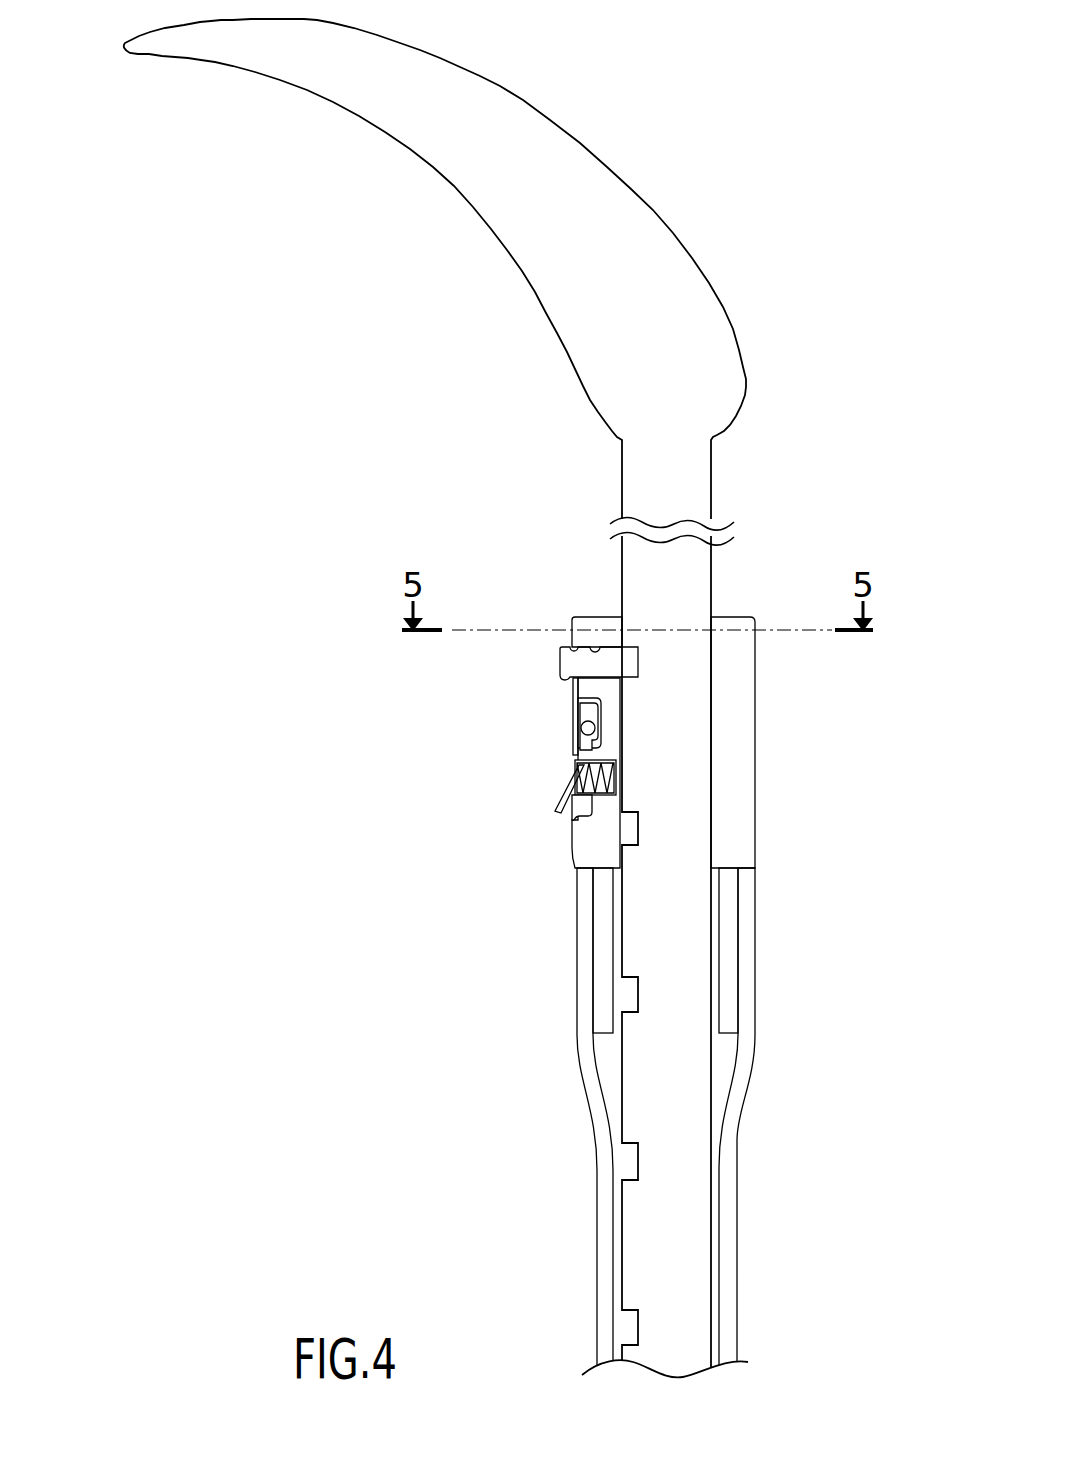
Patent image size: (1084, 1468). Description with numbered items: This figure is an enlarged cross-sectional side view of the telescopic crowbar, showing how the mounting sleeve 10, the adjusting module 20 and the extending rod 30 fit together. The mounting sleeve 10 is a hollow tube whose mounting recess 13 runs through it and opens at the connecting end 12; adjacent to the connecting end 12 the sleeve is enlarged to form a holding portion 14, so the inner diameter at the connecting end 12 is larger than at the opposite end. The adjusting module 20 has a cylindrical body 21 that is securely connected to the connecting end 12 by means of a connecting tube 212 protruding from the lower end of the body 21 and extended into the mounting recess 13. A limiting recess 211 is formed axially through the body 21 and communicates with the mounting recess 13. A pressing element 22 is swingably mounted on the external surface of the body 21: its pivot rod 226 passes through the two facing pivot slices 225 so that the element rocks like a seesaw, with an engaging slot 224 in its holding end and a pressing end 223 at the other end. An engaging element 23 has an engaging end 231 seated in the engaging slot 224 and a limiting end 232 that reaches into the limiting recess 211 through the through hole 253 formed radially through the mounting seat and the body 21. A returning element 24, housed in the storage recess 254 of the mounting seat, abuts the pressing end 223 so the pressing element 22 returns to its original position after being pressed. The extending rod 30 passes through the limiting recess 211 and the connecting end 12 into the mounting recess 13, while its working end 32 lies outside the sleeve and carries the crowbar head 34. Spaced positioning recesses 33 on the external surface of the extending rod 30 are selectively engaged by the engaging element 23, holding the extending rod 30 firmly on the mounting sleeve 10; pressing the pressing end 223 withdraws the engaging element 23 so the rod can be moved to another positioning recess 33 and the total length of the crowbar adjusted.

The mounting sleeve 10 is at (672, 977).
The connecting end 12 is at (748, 868).
The mounting recess 13 is at (622, 1250).
The holding portion 14 is at (593, 1075).
The adjusting module 20 is at (573, 716).
The body 21 is at (769, 716).
The limiting recess 211 is at (710, 648).
The connecting tube 212 is at (728, 958).
The pressing element 22 is at (584, 770).
The pressing end 223 is at (556, 812).
The engaging slot 224 is at (575, 677).
The pivot slices 225 is at (584, 744).
The pivot rod 226 is at (581, 728).
The engaging element 23 is at (639, 640).
The engaging end 231 is at (565, 660).
The limiting end 232 is at (640, 663).
The returning element 24 is at (615, 787).
The through hole 253 is at (604, 646).
The storage recess 254 is at (614, 777).
The extending rod 30 is at (477, 704).
The working end 32 is at (715, 437).
The positioning recesses 33 is at (620, 990).
The crowbar head 34 is at (585, 178).